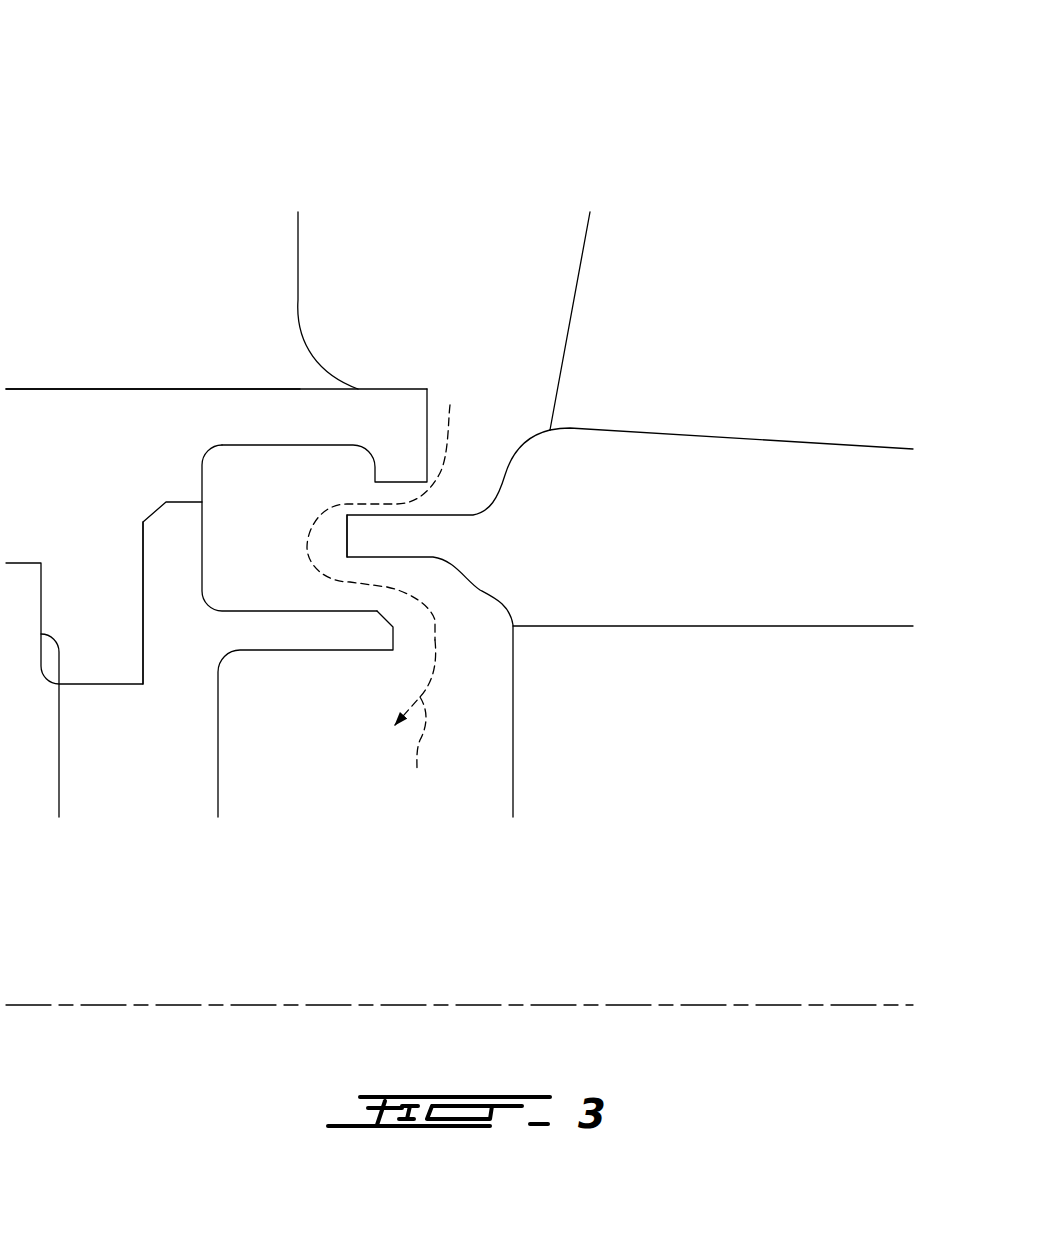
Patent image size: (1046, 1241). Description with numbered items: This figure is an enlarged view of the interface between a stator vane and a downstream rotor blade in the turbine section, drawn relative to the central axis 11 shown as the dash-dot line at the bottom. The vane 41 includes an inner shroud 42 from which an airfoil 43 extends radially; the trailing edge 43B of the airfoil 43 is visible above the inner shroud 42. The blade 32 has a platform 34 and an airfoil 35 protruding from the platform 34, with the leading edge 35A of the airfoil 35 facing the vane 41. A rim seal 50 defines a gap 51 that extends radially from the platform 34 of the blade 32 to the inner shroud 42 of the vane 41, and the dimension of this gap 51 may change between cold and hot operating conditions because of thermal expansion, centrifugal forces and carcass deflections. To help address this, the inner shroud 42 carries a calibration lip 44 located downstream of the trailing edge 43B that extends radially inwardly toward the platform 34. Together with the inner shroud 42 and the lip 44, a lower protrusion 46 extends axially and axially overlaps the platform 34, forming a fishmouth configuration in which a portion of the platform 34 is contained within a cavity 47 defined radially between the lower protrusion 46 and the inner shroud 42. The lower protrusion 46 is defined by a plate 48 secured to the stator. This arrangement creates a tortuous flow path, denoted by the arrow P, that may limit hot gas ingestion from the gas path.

The vane 41 is at (104, 180).
The airfoil 43 is at (58, 304).
The trailing edge 43B is at (298, 243).
The inner shroud 42 is at (117, 415).
The lip 44 is at (397, 460).
The cavity 47 is at (245, 535).
The lower protrusion 46 is at (326, 628).
The plate 48 is at (180, 768).
The blade 32 is at (809, 316).
The leading edge 35A is at (580, 283).
The airfoil 35 is at (677, 351).
The platform 34 is at (398, 532).
The rim seal 50 is at (450, 405).
The gap 51 is at (455, 488).
The arrow P is at (415, 720).
The central axis 11 is at (685, 1003).